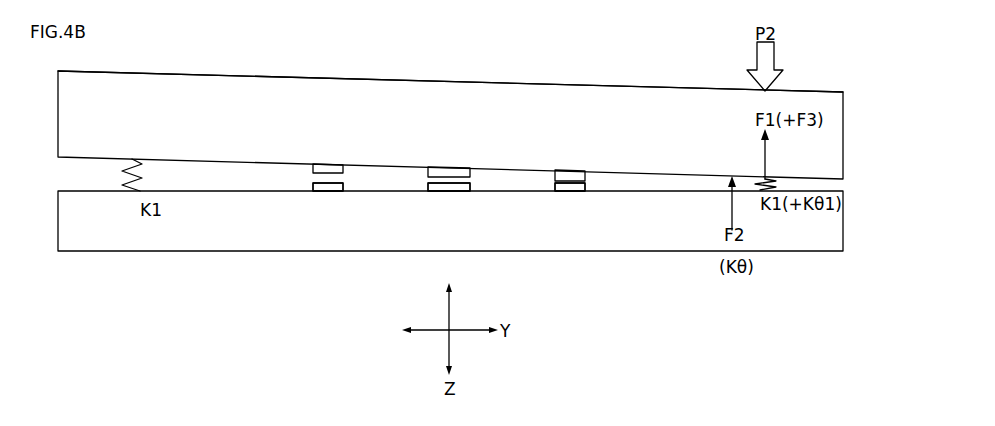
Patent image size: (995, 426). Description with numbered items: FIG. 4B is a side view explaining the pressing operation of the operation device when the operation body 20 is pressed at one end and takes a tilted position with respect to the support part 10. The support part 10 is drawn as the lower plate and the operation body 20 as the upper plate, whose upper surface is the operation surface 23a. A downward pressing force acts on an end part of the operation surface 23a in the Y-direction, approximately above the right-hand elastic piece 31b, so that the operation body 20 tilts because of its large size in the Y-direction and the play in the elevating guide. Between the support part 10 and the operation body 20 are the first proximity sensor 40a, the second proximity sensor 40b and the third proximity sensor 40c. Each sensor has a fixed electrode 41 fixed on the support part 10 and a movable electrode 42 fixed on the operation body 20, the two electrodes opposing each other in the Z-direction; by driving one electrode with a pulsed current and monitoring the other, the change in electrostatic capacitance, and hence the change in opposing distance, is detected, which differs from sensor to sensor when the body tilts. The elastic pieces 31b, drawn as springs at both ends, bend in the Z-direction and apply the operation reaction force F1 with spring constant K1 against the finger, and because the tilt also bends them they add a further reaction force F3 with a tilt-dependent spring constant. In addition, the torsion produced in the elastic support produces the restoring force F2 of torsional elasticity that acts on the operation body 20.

The support part 10 is at (848, 232).
The operation body 20 is at (848, 108).
The operation surface 23a is at (640, 87).
The elastic piece 31b is at (128, 183).
The first proximity sensor 40a is at (452, 202).
The second proximity sensor 40b is at (578, 202).
The third proximity sensor 40c is at (339, 202).
The fixed electrode 41 is at (323, 191).
The movable electrode 42 is at (336, 166).